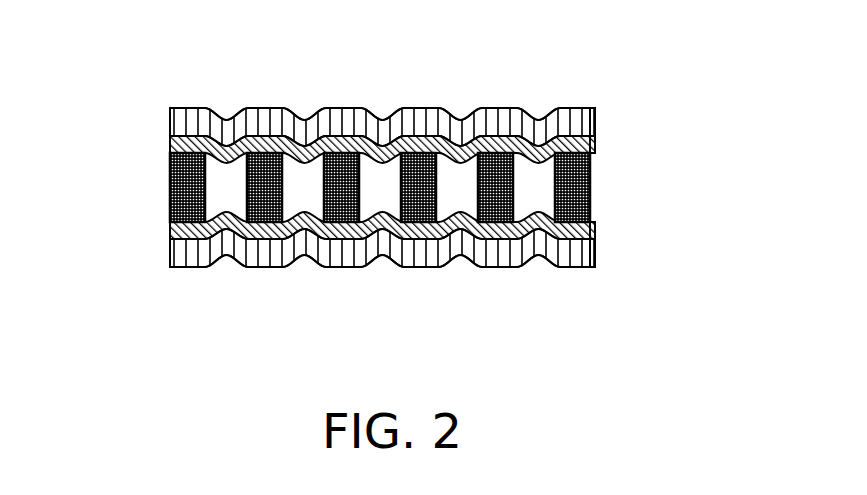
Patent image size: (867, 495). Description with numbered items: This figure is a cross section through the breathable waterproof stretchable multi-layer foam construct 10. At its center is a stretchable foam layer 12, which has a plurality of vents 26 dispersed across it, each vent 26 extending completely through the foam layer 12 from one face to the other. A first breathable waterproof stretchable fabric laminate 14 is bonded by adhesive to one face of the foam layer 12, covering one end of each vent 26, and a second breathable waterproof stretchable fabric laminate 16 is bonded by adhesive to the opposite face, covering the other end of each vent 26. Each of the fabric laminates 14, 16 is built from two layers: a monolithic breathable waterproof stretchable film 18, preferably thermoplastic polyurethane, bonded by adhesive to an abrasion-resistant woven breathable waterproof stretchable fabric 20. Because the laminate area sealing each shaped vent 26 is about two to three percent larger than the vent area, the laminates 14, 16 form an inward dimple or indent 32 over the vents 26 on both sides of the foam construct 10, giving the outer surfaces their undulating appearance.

The breathable waterproof stretchable multi-layer foam construct 10 is at (222, 70).
The stretchable foam layer 12 is at (590, 180).
The first breathable waterproof stretchable fabric laminate 14 is at (592, 153).
The second breathable waterproof stretchable fabric laminate 16 is at (168, 222).
The monolithic breathable waterproof stretchable film 18 is at (170, 149).
The breathable waterproof stretchable fabric 20 is at (170, 111).
The vent 26 is at (530, 172).
The indent 32 is at (373, 110).